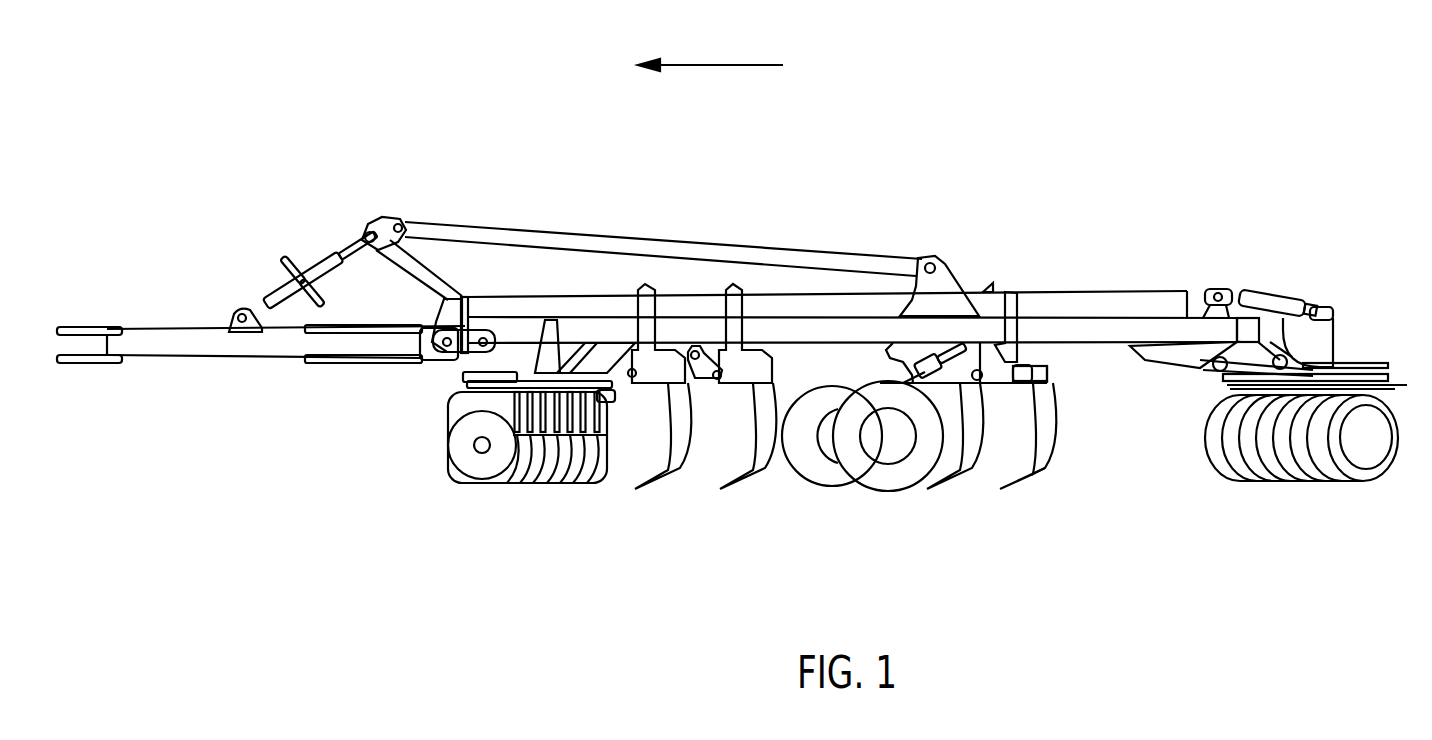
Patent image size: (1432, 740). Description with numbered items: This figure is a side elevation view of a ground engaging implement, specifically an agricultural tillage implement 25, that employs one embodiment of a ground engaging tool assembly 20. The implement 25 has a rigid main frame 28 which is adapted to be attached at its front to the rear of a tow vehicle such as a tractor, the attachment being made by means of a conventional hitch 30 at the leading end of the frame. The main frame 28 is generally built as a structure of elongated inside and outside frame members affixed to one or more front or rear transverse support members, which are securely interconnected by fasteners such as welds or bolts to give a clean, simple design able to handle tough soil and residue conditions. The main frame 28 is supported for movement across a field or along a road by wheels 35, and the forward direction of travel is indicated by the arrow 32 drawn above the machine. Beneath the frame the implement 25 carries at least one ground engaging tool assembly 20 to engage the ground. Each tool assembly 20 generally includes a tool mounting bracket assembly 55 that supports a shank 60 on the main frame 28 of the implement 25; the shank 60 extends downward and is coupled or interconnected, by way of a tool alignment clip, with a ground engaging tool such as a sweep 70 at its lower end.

The ground engaging tool assembly 20 is at (1092, 470).
The agricultural tillage implement 25 is at (911, 185).
The main frame 28 is at (589, 292).
The hitch 30 is at (113, 320).
The arrow 32 is at (707, 62).
The wheels 35 is at (874, 494).
The tool mounting bracket assembly 55 is at (1056, 371).
The shank 60 is at (1052, 491).
The sweep 70 is at (1009, 491).